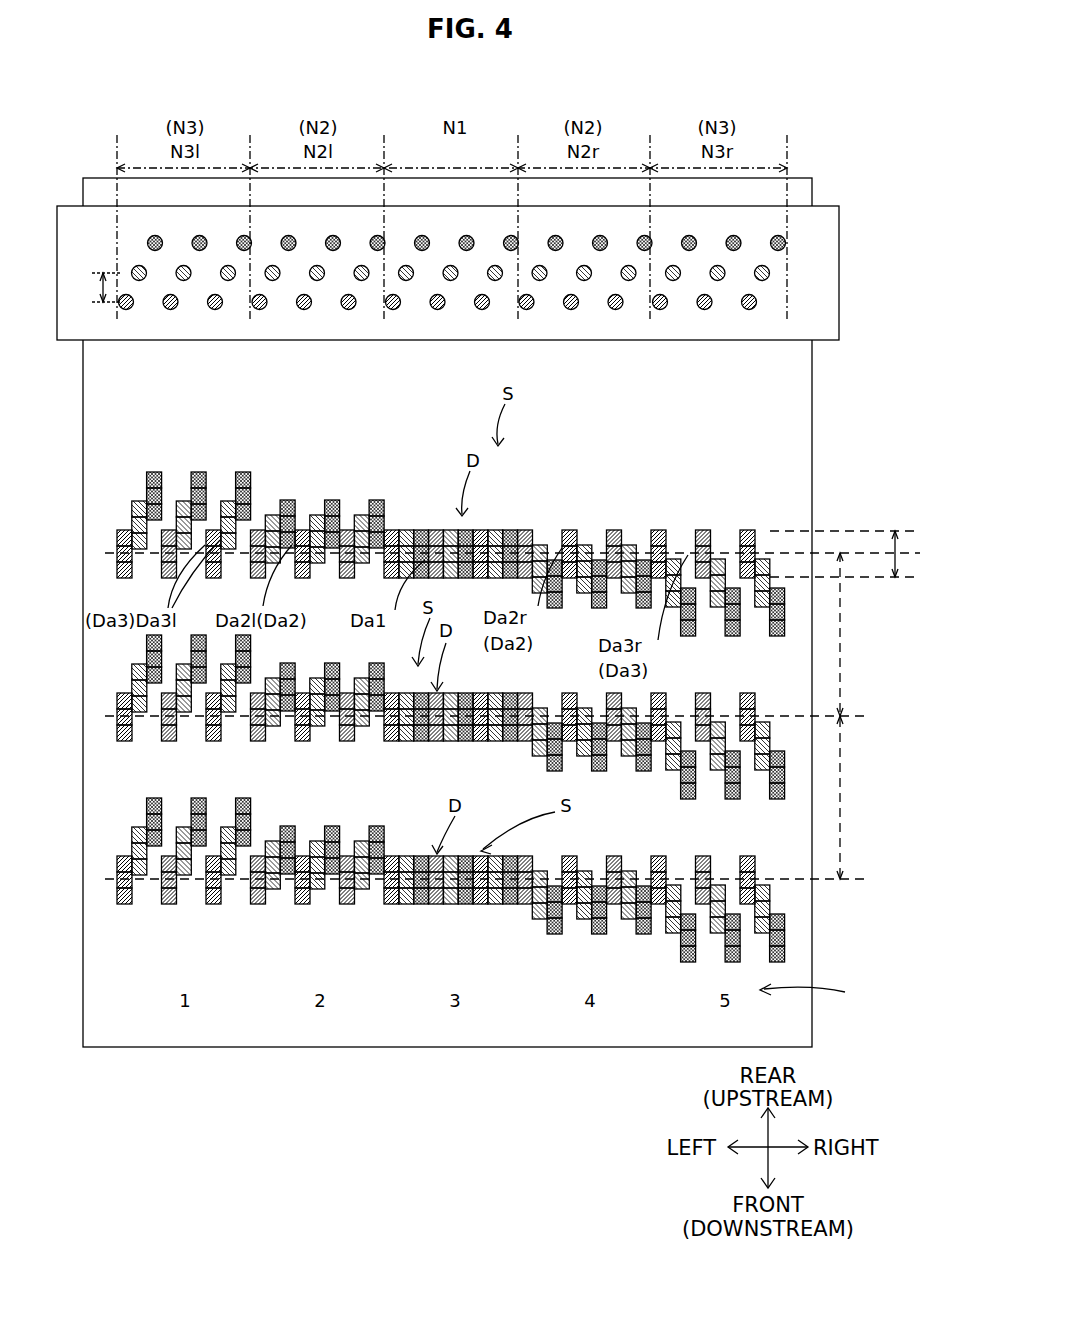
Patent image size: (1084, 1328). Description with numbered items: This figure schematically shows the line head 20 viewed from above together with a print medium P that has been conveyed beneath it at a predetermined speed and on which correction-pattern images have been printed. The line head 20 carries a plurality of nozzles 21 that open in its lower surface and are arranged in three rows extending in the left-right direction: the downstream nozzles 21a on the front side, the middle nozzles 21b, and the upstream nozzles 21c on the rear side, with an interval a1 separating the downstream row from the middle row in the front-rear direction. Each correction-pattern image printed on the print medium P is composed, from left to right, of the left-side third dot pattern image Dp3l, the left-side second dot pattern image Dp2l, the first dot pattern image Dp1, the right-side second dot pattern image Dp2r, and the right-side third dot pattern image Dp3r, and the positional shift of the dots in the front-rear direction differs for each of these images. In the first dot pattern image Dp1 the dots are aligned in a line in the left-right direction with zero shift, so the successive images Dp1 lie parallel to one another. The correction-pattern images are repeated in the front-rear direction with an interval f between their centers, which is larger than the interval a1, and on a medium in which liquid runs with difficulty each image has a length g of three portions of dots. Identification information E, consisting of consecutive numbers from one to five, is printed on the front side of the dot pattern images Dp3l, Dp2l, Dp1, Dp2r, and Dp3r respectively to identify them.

The line head 20 is at (801, 241).
The nozzle 21 is at (530, 303).
The downstream nozzle 21a is at (801, 306).
The middle nozzle 21b is at (801, 273).
The upstream nozzle 21c is at (801, 243).
The print medium P is at (100, 178).
The identification information E is at (810, 992).
The interval a1 is at (92, 287).
The length g is at (904, 554).
The interval f is at (838, 716).
The left-side third dot pattern image Dp3l is at (176, 488).
The left-side second dot pattern image Dp2l is at (302, 488).
The first dot pattern image Dp1 is at (445, 488).
The right-side second dot pattern image Dp2r is at (590, 498).
The right-side third dot pattern image Dp3r is at (720, 495).